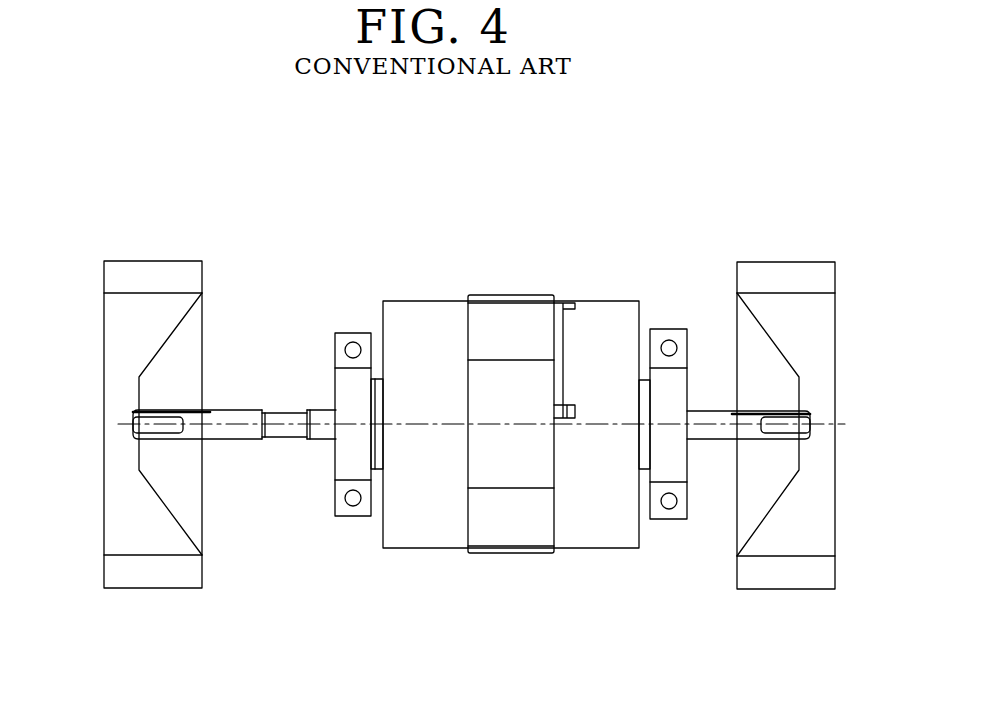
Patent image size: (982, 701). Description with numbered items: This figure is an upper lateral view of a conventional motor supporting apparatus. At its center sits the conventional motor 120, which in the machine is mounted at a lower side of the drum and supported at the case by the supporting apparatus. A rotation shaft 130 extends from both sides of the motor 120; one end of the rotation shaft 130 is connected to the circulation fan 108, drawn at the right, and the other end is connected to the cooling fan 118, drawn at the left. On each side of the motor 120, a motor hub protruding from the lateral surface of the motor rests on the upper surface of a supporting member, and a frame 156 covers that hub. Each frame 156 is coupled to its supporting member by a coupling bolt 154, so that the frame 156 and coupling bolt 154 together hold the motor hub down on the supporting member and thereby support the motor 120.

The circulation fan 108 is at (782, 574).
The cooling fan 118 is at (125, 574).
The motor 120 is at (440, 538).
The rotation shaft 130 is at (228, 432).
The coupling bolt 154 is at (353, 345).
The frame 156 is at (680, 404).